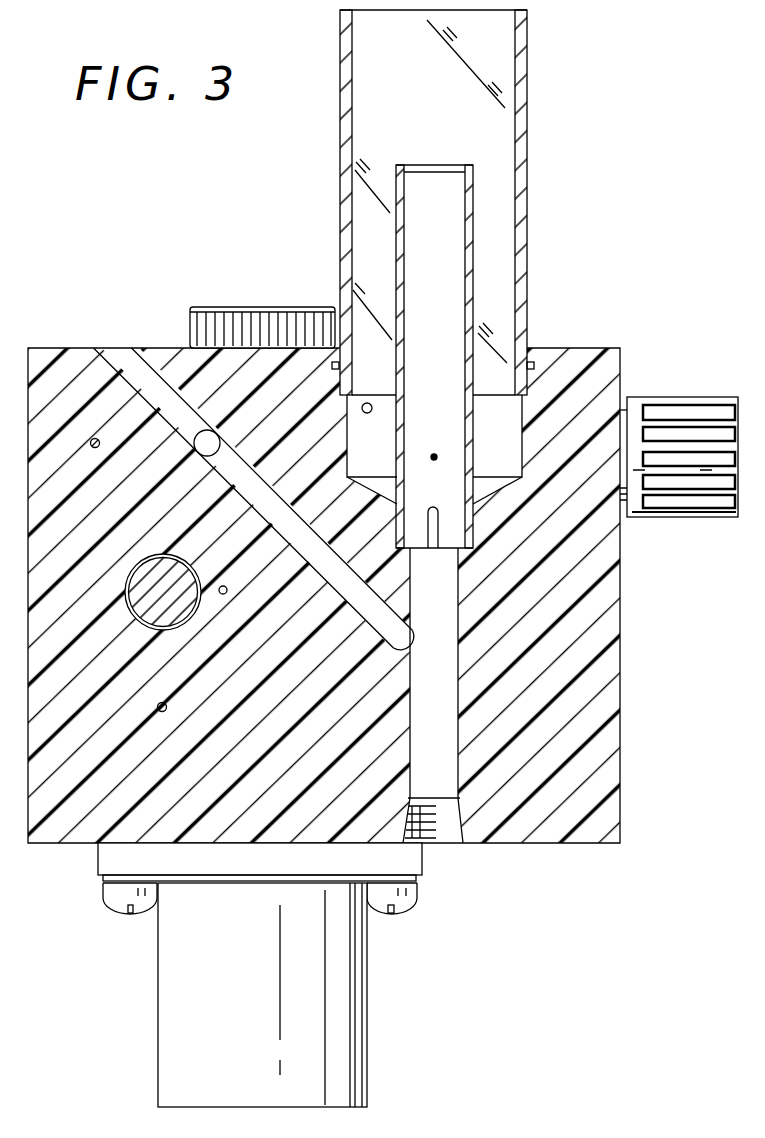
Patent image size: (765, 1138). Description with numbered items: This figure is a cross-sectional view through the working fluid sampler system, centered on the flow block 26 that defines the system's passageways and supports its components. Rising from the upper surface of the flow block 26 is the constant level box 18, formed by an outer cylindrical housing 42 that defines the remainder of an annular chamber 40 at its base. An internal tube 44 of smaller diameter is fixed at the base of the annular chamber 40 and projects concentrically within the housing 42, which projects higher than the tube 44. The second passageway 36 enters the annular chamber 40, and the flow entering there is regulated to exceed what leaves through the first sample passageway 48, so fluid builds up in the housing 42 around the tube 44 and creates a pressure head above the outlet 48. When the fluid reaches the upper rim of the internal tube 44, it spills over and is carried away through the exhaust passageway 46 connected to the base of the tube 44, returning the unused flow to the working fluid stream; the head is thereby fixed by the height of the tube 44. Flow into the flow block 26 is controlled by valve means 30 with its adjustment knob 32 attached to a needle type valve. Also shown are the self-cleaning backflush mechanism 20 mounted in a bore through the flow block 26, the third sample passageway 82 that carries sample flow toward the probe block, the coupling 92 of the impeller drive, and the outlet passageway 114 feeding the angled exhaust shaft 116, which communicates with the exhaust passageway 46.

The constant level box 18 is at (477, 202).
The outer cylindrical housing 42 is at (527, 170).
The annular chamber 40 is at (507, 290).
The internal tube 44 is at (488, 160).
The second passageway 36 is at (434, 454).
The first sample passageway 48 is at (372, 410).
The exhaust passageway 46 is at (450, 732).
The outlet passageway 114 is at (207, 430).
The angled exhaust shaft 116 is at (396, 628).
The coupling 92 is at (148, 596).
The third sample passageway 82 is at (226, 587).
The flow block 26 is at (580, 838).
The adjustment knob 32 is at (690, 513).
The valve means 30 is at (262, 327).
The self-cleaning backflush mechanism 20 is at (340, 972).